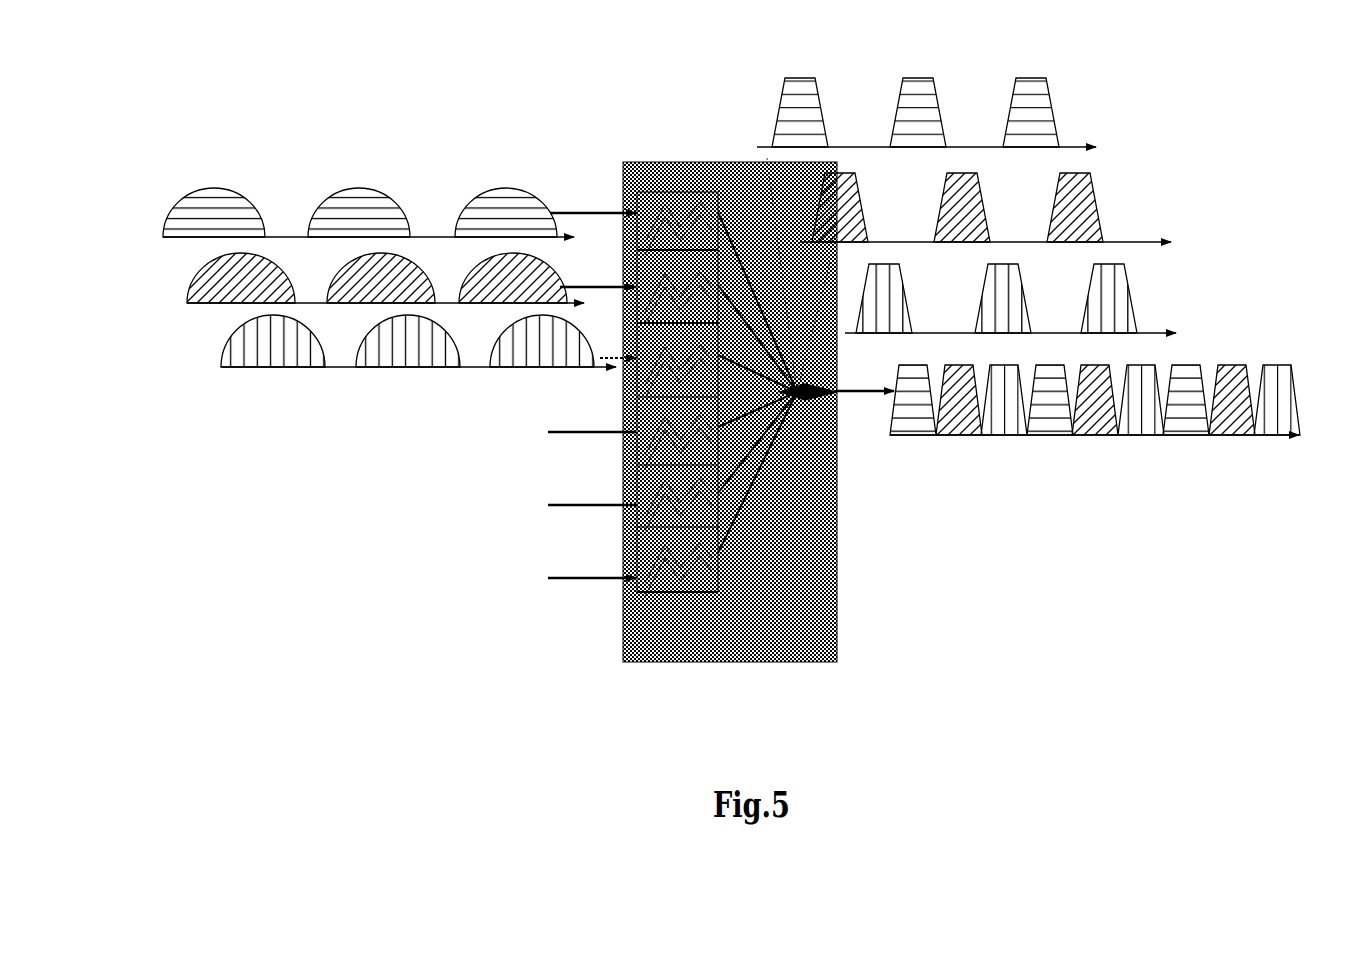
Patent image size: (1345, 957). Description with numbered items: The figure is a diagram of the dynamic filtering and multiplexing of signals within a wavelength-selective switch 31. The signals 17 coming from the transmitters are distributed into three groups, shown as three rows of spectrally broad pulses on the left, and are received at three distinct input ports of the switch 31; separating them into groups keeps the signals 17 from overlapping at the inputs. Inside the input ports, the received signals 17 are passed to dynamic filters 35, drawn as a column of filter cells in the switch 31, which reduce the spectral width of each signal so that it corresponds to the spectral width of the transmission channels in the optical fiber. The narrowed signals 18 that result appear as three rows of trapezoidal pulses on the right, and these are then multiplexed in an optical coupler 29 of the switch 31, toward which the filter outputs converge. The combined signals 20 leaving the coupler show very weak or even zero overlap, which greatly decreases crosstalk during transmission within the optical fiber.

The signals 17 is at (166, 175).
The filtered signals 18 is at (1175, 115).
The multiplexed signals 20 is at (1305, 450).
The optical coupler 29 is at (805, 400).
The wavelength-selective switch 31 is at (810, 620).
The dynamic filters 35 is at (637, 592).